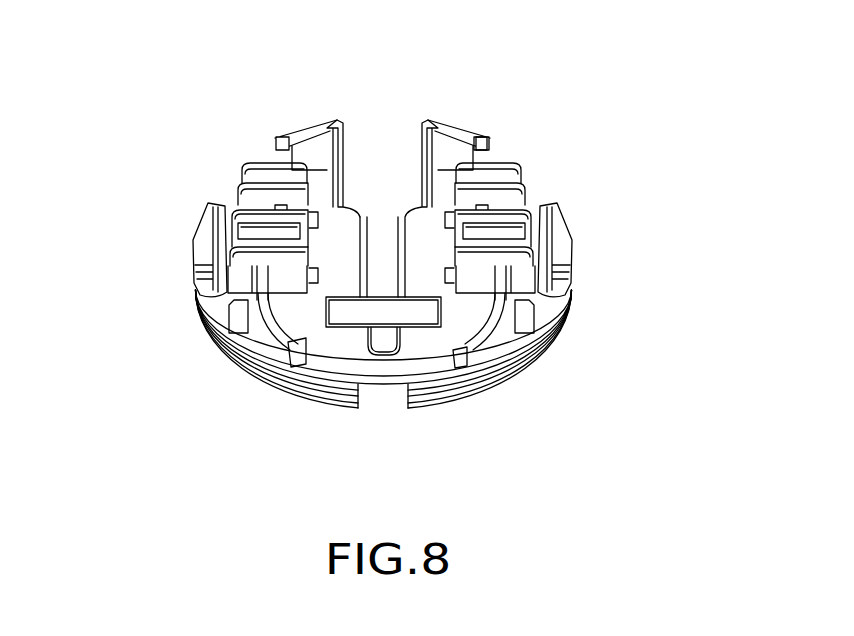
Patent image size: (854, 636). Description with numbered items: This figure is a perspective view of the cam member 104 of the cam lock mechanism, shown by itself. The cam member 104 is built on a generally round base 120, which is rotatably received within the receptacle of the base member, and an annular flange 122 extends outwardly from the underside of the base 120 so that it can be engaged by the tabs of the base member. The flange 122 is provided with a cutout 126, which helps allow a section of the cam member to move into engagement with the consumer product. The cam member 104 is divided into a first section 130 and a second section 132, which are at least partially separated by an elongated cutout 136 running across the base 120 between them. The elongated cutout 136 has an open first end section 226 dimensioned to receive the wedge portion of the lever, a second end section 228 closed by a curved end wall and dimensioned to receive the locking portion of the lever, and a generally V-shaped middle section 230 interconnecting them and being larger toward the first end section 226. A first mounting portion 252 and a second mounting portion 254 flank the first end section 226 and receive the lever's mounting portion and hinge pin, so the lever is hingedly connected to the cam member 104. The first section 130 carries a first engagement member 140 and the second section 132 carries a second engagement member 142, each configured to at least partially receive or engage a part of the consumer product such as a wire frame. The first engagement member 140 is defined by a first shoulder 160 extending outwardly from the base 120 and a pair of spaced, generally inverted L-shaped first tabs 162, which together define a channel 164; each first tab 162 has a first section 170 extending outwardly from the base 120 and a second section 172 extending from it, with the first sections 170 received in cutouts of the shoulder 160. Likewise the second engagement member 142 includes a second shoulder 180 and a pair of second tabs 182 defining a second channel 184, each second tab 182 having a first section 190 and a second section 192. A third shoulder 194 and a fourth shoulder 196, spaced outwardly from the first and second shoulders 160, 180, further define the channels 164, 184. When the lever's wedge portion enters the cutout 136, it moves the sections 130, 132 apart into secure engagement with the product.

The cam member 104 is at (342, 276).
The base 120 is at (333, 352).
The annular flange 122 is at (485, 390).
The cutout 126 is at (363, 408).
The first section 130 is at (227, 320).
The second section 132 is at (456, 342).
The elongated cutout 136 is at (361, 260).
The first engagement member 140 is at (230, 156).
The second engagement member 142 is at (535, 145).
The first shoulder 160 is at (233, 288).
The first tab 162 is at (260, 148).
The channel 164 is at (230, 203).
The first section 170 is at (283, 292).
The second section 172 is at (238, 257).
The second shoulder 180 is at (507, 286).
The second tab 182 is at (500, 142).
The second channel 184 is at (533, 204).
The first section 190 is at (483, 290).
The second section 192 is at (528, 253).
The third shoulder 194 is at (202, 228).
The fourth shoulder 196 is at (561, 229).
The first end section 226 is at (341, 187).
The second end section 228 is at (416, 333).
The middle section 230 is at (397, 233).
The first mounting portion 252 is at (338, 118).
The second mounting portion 254 is at (428, 118).